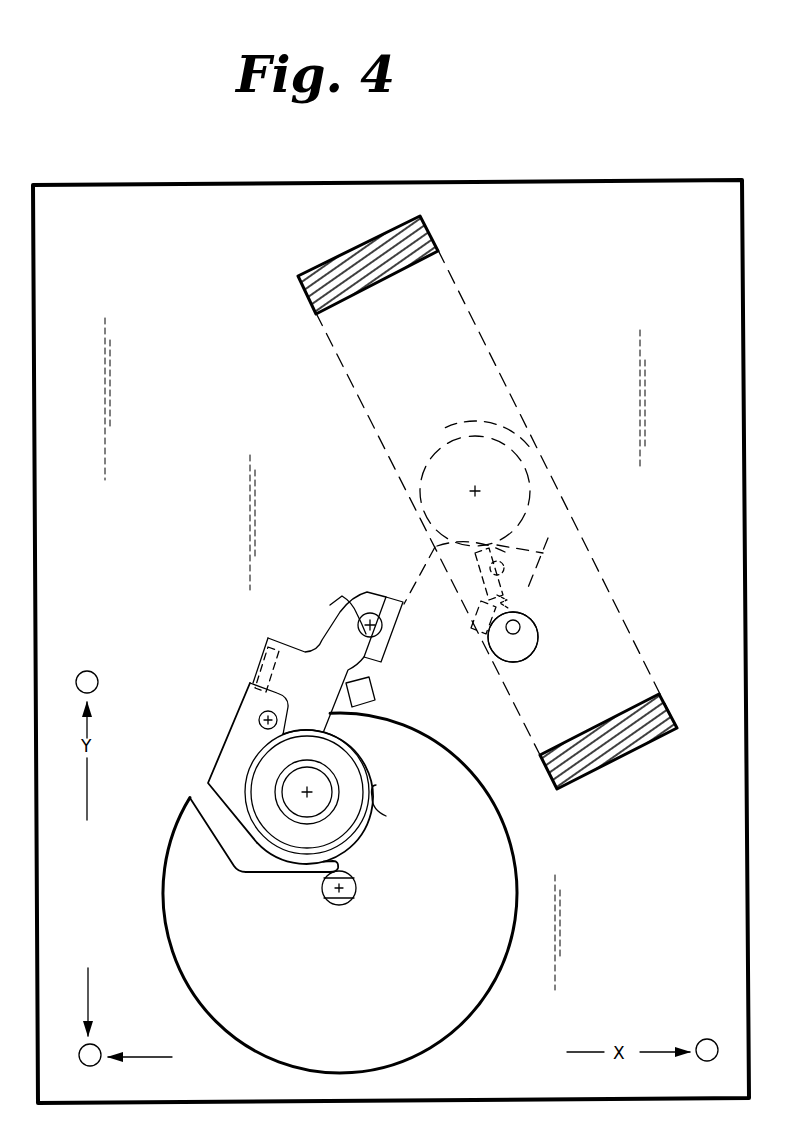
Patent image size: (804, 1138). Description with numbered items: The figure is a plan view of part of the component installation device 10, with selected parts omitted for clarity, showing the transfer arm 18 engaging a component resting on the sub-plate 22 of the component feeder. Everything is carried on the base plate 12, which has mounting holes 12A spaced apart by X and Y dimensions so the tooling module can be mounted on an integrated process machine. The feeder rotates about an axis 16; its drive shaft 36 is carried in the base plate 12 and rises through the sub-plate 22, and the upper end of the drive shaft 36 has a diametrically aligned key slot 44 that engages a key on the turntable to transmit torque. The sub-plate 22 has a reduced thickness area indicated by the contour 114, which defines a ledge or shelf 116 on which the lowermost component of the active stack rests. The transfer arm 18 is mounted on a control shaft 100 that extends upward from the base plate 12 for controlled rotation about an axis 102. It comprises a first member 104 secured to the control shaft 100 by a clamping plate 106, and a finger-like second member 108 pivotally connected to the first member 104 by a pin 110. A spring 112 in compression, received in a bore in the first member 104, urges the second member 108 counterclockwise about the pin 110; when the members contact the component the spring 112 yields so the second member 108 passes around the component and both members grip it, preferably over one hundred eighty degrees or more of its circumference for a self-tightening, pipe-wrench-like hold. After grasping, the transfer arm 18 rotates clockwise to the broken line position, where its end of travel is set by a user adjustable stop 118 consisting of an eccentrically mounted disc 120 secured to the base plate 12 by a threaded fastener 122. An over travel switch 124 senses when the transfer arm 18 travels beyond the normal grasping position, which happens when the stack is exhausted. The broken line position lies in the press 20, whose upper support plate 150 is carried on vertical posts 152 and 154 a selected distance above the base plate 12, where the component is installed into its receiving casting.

The component installation device 10 is at (600, 176).
The base plate 12 is at (657, 871).
The mounting holes 12A is at (99, 682).
The axis 16 is at (328, 903).
The transfer arm 18 is at (558, 544).
The press 20 is at (329, 356).
The sub-plate 22 is at (457, 900).
The drive shaft 36 is at (343, 907).
The key slot 44 is at (355, 890).
The control shaft 100 is at (372, 616).
The axis 102 is at (342, 612).
The first member 104 is at (334, 681).
The clamping plate 106 is at (388, 666).
The second member 108 is at (236, 764).
The pin 110 is at (258, 722).
The spring 112 is at (260, 693).
The contour 114 is at (232, 874).
The shelf 116 is at (230, 838).
The stop 118 is at (540, 631).
The eccentrically mounted disc 120 is at (538, 651).
The threaded fastener 122 is at (520, 622).
The over travel switch 124 is at (372, 694).
The upper support plate 150 is at (500, 358).
The vertical post 152 is at (440, 266).
The vertical post 154 is at (641, 746).